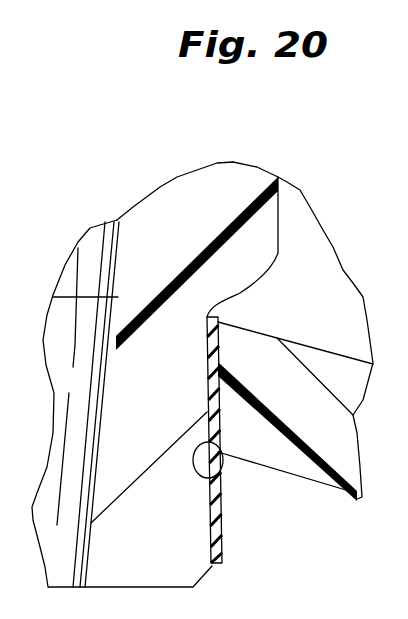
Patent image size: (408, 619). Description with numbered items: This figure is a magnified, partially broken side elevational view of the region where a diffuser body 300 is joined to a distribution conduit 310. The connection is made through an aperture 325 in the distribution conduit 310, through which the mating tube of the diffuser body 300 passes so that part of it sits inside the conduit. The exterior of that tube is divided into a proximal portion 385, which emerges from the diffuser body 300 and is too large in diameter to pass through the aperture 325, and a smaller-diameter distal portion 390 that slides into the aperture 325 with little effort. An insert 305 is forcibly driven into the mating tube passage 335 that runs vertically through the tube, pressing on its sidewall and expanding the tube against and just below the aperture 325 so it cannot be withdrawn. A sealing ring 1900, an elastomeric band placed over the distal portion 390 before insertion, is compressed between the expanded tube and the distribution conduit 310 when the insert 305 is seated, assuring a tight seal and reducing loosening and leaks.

The diffuser body 300 is at (257, 153).
The insert 305 is at (77, 237).
The distribution conduit 310 is at (322, 343).
The aperture 325 is at (222, 480).
The mating tube passage 335 is at (103, 402).
The proximal portion 385 is at (201, 220).
The distal portion 390 is at (160, 545).
The sealing ring 1900 is at (222, 527).